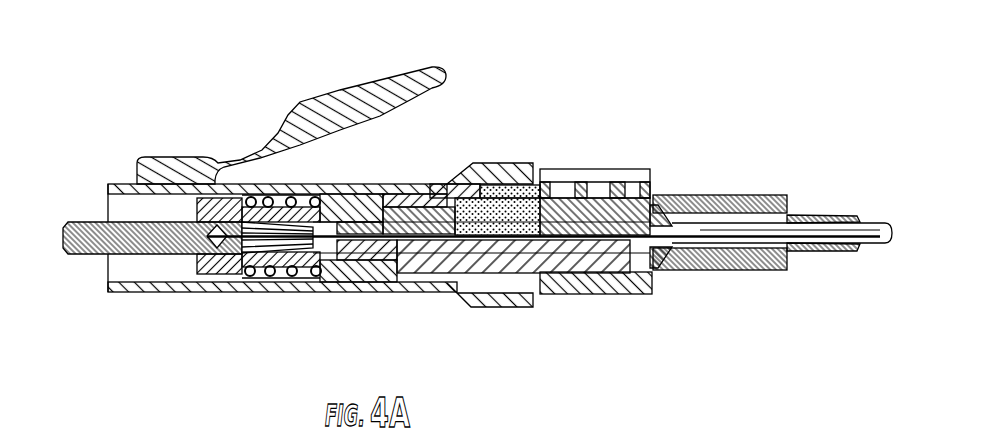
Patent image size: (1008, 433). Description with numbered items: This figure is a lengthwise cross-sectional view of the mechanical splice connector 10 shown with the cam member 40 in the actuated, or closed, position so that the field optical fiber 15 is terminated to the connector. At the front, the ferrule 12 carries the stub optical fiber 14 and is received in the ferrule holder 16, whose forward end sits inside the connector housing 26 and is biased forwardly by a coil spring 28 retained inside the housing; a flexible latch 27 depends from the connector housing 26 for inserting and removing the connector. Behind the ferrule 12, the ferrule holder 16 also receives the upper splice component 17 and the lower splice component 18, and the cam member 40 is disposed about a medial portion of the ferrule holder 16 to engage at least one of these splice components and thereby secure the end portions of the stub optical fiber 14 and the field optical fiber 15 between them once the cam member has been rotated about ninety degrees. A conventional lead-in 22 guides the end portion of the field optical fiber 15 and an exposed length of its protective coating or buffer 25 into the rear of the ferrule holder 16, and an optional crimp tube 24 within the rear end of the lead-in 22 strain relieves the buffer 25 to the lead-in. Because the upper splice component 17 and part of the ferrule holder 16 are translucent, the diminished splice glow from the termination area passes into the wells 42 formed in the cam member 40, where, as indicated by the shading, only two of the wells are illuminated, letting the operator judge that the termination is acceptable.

The mechanical splice connector 10 is at (481, 55).
The ferrule 12 is at (140, 254).
The stub optical fiber 14 is at (380, 213).
The field optical fiber 15 is at (655, 258).
The ferrule holder 16 is at (303, 203).
The upper splice component 17 is at (418, 217).
The splice component 18 is at (417, 284).
The lead-in 22 is at (738, 197).
The crimp tube 24 is at (810, 252).
The buffer 25 is at (870, 233).
The connector housing 26 is at (503, 307).
The latch 27 is at (322, 97).
The coil spring 28 is at (258, 268).
The cam member 40 is at (620, 297).
The wells 42 is at (530, 187).